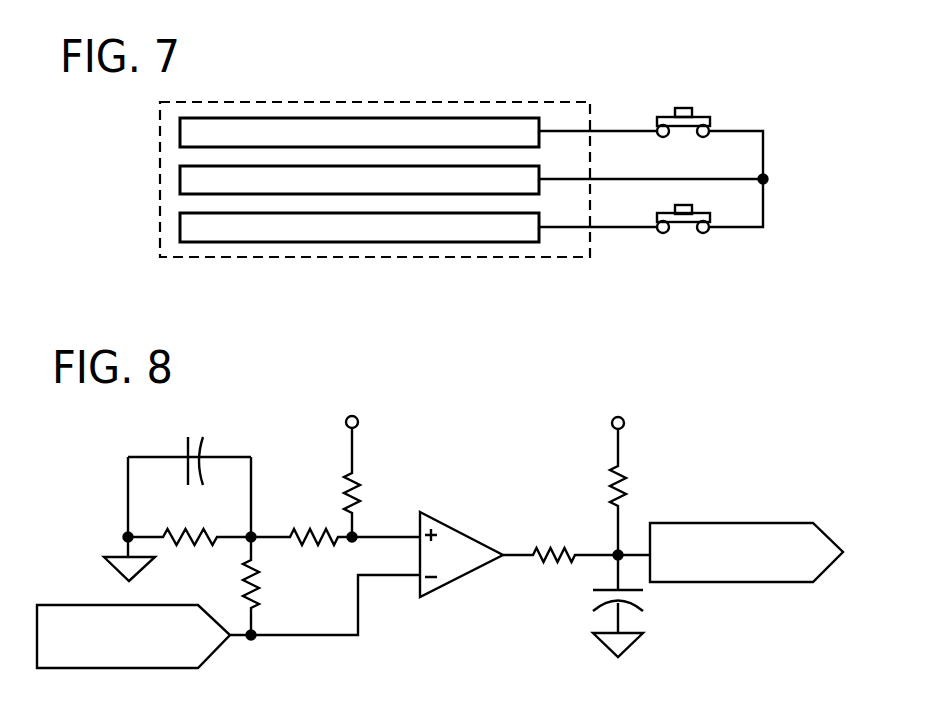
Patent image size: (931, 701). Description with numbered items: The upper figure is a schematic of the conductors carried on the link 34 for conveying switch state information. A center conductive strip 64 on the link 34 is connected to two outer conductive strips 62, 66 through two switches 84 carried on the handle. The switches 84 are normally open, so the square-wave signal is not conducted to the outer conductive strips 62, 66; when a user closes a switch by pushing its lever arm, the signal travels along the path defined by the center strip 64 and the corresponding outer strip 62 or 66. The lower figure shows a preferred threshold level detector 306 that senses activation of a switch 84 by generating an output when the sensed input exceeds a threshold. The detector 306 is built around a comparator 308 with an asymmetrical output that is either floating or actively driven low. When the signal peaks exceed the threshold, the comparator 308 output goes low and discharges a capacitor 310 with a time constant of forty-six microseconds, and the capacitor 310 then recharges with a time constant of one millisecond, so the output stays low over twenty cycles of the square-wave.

In FIG. 7, the link 34 is at (560, 102).
In FIG. 7, the outer conductive strip 62 is at (297, 130).
In FIG. 7, the center conductive strip 64 is at (319, 181).
In FIG. 7, the outer conductive strip 66 is at (353, 224).
In FIG. 7, the switch 84 is at (684, 108).
In FIG. 8, the threshold level detector 306 is at (440, 513).
In FIG. 8, the comparator 308 is at (470, 535).
In FIG. 8, the capacitor 310 is at (626, 616).